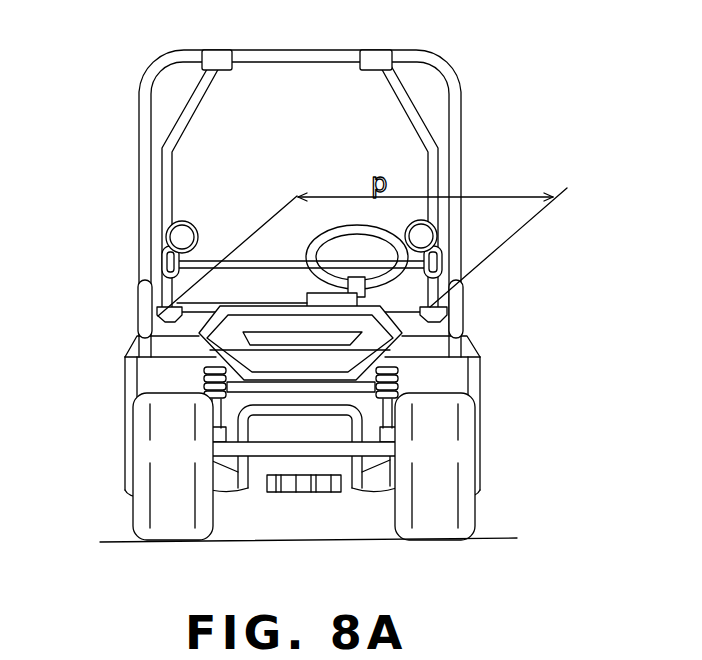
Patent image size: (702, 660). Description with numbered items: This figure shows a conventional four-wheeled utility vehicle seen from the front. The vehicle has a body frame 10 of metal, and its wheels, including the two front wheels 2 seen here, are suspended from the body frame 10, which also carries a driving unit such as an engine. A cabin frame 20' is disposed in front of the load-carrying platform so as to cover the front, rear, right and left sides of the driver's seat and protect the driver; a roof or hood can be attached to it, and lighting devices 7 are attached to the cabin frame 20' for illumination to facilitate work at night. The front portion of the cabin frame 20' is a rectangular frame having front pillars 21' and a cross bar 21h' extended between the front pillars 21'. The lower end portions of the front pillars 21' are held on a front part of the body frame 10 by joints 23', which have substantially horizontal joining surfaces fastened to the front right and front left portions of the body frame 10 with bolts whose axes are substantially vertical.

The cabin frame 20' is at (356, 183).
The front pillars 21' is at (352, 178).
The cross bar 21h' is at (302, 247).
The lighting devices 7 is at (166, 232).
The joints 23' is at (296, 313).
The front wheels 2 is at (145, 495).
The body frame 10 is at (311, 387).